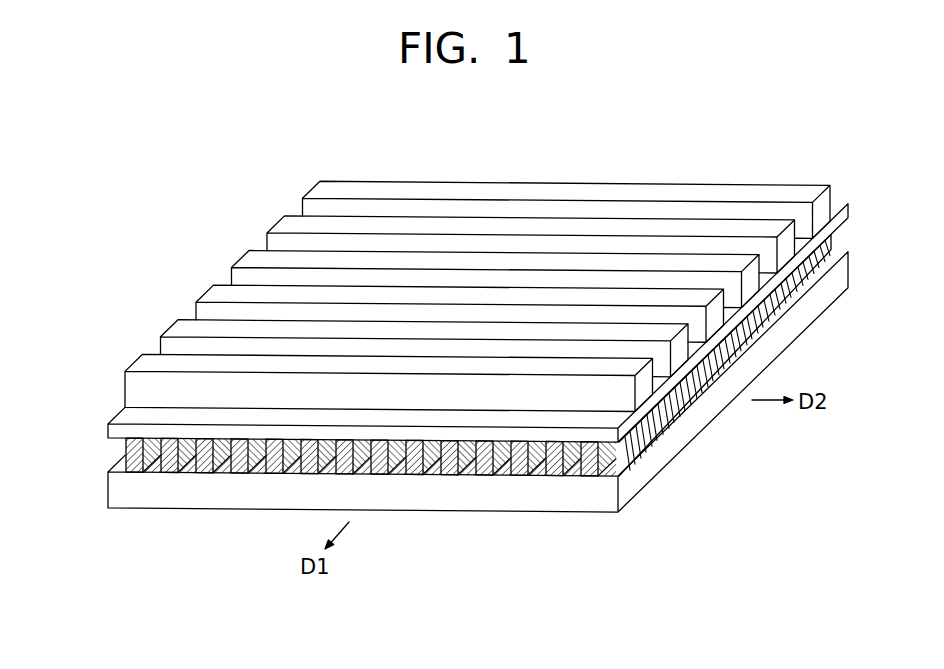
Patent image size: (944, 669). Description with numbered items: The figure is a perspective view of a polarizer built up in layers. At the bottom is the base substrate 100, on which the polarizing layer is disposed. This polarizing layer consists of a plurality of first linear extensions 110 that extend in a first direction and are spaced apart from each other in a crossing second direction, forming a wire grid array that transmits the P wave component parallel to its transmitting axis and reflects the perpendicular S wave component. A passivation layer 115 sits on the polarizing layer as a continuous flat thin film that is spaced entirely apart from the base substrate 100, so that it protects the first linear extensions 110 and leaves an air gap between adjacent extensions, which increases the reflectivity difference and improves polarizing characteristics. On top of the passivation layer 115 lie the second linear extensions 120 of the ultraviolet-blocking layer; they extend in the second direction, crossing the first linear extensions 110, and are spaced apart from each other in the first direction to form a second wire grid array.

The base substrate 100 is at (113, 488).
The first linear extensions 110 is at (164, 473).
The passivation layer 115 is at (109, 428).
The second linear extensions 120 is at (211, 291).